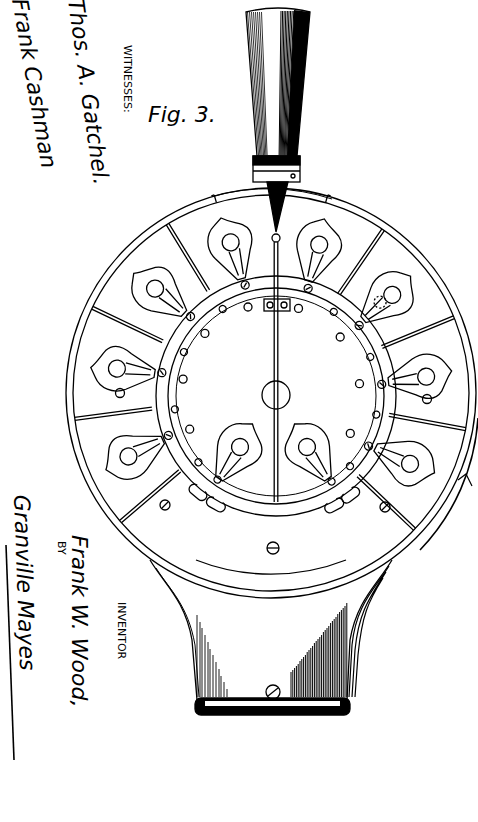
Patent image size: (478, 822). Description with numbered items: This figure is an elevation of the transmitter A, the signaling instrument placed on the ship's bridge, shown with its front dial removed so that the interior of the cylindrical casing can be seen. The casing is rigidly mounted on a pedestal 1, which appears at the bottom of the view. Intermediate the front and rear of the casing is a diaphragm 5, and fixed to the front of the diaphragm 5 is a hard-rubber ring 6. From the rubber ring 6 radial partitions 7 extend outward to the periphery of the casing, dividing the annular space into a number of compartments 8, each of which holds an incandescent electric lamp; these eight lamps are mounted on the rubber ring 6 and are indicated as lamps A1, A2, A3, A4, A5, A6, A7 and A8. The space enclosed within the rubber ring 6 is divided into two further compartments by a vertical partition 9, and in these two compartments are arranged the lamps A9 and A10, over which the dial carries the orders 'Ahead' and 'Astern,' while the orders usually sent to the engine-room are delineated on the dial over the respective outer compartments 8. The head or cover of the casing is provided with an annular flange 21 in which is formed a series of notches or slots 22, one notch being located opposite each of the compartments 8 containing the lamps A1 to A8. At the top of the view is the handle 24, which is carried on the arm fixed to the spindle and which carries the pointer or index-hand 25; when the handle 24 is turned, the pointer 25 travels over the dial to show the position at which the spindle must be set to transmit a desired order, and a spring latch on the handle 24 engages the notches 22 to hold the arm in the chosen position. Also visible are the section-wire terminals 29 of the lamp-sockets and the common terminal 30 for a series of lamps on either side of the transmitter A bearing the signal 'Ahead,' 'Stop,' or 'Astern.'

The pedestal 1 is at (271, 637).
The diaphragm 5 is at (288, 546).
The hard-rubber ring 6 is at (252, 505).
The radial partitions 7 is at (183, 247).
The compartments 8 is at (259, 353).
The vertical partition 9 is at (278, 342).
The annular flange 21 is at (151, 231).
The notches or slots 22 is at (217, 196).
The handle 24 is at (298, 119).
The pointer or index-hand 25 is at (283, 209).
The section-wire terminals 29 is at (196, 343).
The common terminal 30 is at (197, 455).
The transmitter A is at (477, 260).
The incandescent electric lamp A1 is at (113, 446).
The incandescent electric lamp A2 is at (108, 352).
The incandescent electric lamp A3 is at (163, 256).
The incandescent electric lamp A4 is at (242, 214).
The incandescent electric lamp A5 is at (333, 242).
The incandescent electric lamp A6 is at (392, 277).
The incandescent electric lamp A7 is at (433, 358).
The incandescent electric lamp A8 is at (433, 456).
The electric lamp A9 is at (237, 432).
The electric lamp A10 is at (308, 432).